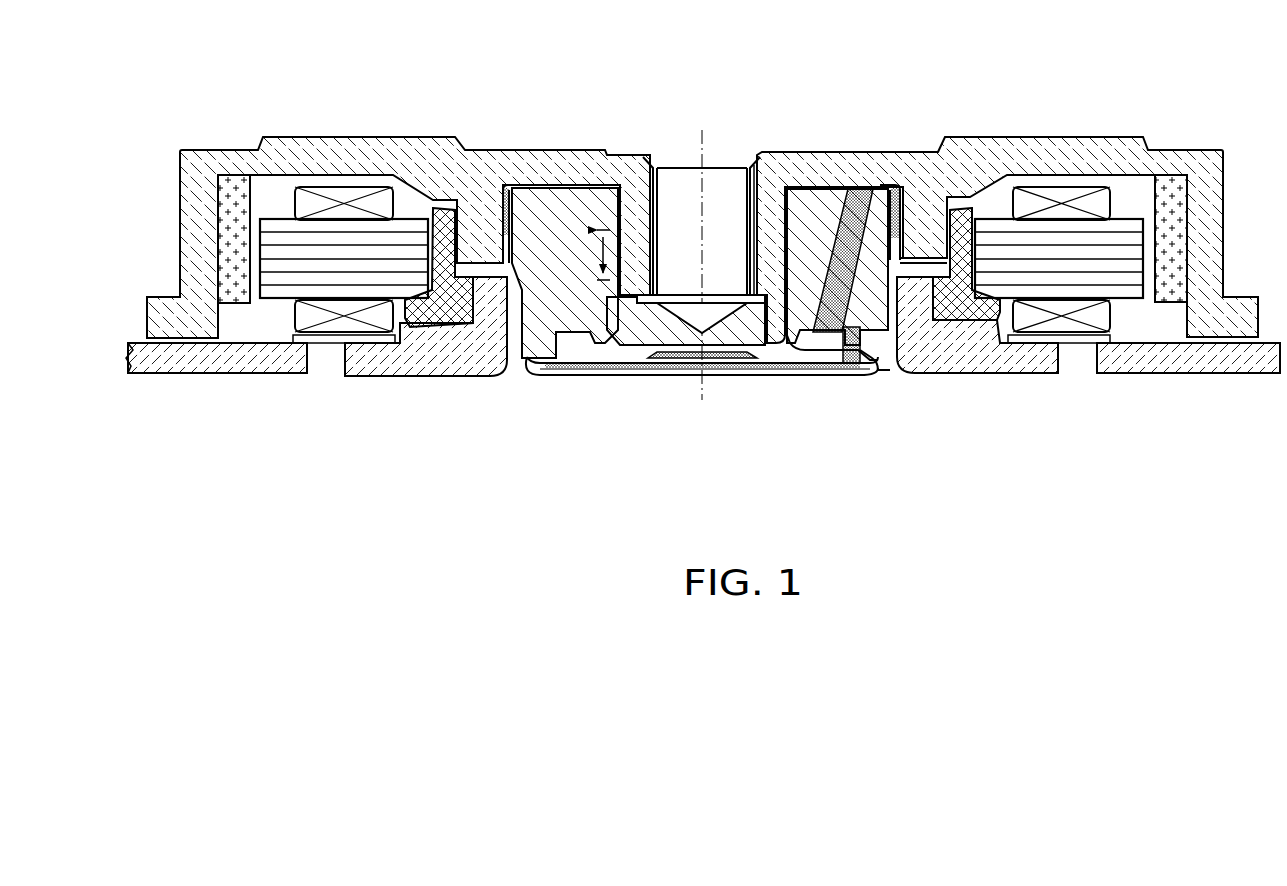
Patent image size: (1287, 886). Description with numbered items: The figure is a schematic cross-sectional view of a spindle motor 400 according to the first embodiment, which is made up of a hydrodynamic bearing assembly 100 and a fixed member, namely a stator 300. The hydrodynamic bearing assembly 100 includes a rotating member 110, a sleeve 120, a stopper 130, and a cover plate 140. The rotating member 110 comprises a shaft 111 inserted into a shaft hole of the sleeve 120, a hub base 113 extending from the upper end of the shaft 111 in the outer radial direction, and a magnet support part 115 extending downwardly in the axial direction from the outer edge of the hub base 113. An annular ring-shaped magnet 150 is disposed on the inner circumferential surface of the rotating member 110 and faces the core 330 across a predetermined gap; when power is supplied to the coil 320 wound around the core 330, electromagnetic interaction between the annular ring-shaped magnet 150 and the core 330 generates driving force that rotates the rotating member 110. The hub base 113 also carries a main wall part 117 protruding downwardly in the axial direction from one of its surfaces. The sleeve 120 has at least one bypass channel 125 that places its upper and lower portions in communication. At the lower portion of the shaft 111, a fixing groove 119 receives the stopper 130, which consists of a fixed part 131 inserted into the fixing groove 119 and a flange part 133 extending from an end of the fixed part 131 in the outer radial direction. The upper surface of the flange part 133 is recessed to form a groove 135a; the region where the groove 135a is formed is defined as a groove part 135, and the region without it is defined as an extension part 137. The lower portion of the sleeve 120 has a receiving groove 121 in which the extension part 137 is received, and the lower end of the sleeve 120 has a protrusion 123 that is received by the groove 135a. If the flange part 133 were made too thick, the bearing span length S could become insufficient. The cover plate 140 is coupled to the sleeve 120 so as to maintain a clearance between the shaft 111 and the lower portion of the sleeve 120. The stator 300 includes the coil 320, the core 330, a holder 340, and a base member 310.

The hydrodynamic bearing assembly 100 is at (672, 387).
The rotating member 110 is at (970, 32).
The shaft 111 is at (760, 160).
The hub base 113 is at (980, 165).
The magnet support part 115 is at (1203, 220).
The main wall part 117 is at (925, 225).
The fixing groove 119 is at (737, 280).
The sleeve 120 is at (812, 200).
The receiving groove 121 is at (840, 350).
The protrusion 123 is at (897, 355).
The bypass channel 125 is at (862, 200).
The stopper 130 is at (798, 497).
The fixed part 131 is at (708, 375).
The flange part 133 is at (818, 460).
The groove part 135 is at (788, 362).
The groove 135a is at (770, 356).
The extension part 137 is at (820, 372).
The cover plate 140 is at (853, 368).
The annular ring-shaped magnet 150 is at (1168, 292).
The stator 300 is at (1120, 432).
The base member 310 is at (1005, 372).
The coil 320 is at (1058, 325).
The core 330 is at (1092, 268).
The holder 340 is at (964, 310).
The spindle motor 400 is at (472, 53).
The bearing span length S is at (597, 237).